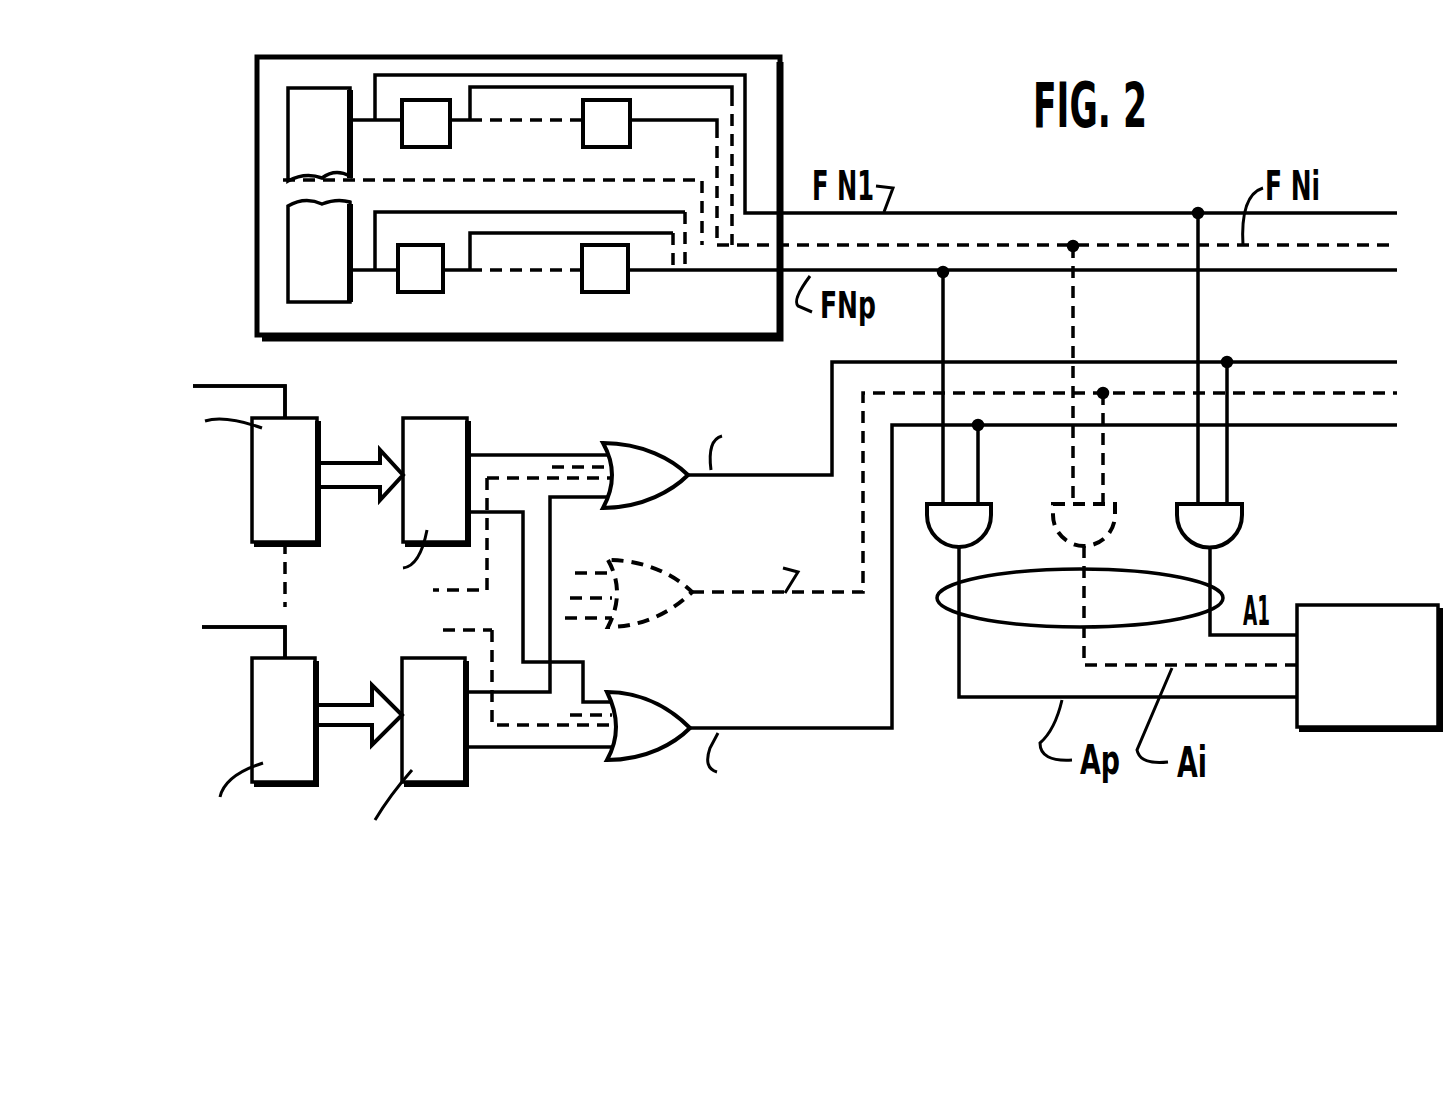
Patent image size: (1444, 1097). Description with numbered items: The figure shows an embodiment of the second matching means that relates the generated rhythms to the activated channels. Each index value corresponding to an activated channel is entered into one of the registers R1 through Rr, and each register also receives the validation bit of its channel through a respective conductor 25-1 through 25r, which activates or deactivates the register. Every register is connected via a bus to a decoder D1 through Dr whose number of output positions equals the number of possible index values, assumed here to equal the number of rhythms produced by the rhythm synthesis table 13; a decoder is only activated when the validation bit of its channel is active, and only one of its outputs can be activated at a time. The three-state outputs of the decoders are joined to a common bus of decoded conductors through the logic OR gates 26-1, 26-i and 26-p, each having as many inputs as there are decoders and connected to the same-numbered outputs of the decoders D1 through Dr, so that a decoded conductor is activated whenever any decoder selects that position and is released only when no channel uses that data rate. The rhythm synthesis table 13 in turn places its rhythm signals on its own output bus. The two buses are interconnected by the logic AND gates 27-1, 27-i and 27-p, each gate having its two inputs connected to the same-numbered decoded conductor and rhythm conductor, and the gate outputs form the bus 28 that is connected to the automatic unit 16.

The rhythm synthesis table 13 is at (762, 140).
The automatic unit 16 is at (1372, 718).
The conductor 25-1 is at (285, 403).
The conductor 25r is at (285, 637).
The logic OR gate 26-1 is at (643, 463).
The logic OR gate 26-i is at (658, 590).
The logic OR gate 26-p is at (640, 738).
The logic AND gate 27-1 is at (1223, 520).
The logic AND gate 27-i is at (1100, 524).
The logic AND gate 27-p is at (948, 515).
The bus 28 is at (1222, 605).
The register R1 is at (268, 458).
The register Rr is at (268, 728).
The decoder D1 is at (422, 445).
The decoder Dr is at (434, 785).